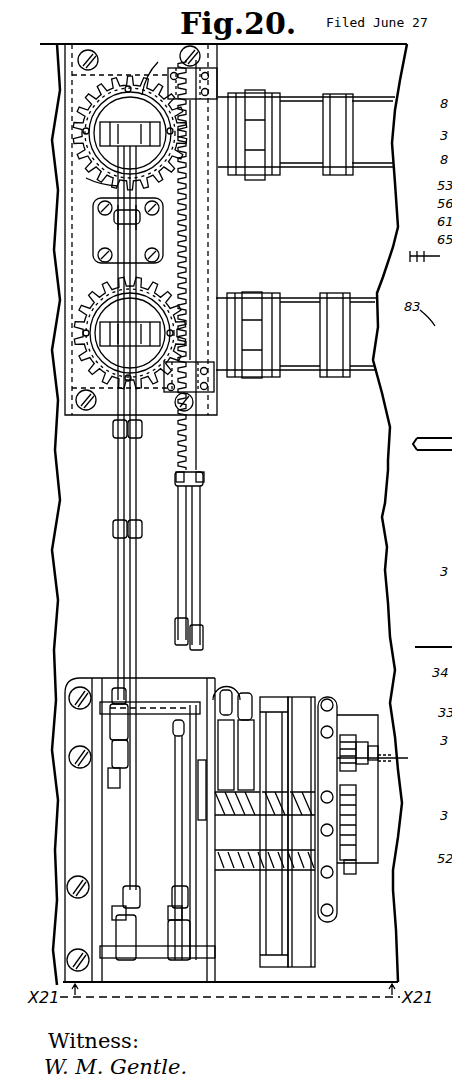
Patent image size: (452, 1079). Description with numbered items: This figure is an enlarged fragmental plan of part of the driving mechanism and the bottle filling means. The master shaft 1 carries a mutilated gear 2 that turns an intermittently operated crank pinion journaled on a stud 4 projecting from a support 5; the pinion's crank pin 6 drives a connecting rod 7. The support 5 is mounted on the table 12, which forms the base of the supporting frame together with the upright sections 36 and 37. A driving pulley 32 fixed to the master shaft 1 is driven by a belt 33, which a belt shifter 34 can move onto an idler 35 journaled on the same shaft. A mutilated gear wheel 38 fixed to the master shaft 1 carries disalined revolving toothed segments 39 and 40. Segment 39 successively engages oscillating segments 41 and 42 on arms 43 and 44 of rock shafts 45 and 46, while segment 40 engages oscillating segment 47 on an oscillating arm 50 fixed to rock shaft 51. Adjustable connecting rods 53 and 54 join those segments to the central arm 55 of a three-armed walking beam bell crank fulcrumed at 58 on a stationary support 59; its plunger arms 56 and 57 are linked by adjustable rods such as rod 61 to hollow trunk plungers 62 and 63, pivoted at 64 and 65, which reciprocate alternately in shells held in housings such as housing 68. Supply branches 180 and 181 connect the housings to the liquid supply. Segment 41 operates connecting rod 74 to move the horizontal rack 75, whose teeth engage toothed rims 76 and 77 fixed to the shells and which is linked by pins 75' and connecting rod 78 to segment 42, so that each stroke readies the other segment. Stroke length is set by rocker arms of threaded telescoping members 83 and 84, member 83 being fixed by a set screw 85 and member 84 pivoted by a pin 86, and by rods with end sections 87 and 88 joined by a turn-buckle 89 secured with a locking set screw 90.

The master shaft 1 is at (358, 832).
The mutilated gear 2 is at (350, 872).
The stud 4 is at (376, 765).
The support 5 is at (330, 697).
The crank pin 6 is at (378, 748).
The connecting rod 7 is at (350, 735).
The table 12 is at (385, 540).
The driving pulley 32 is at (254, 758).
The belt 33 is at (270, 697).
The belt shifter 34 is at (262, 985).
The idler 35 is at (300, 697).
The section 36 is at (220, 680).
The section 37 is at (96, 690).
The mutilated gear wheel 38 is at (202, 875).
The revolving toothed segment 39 is at (245, 890).
The revolving toothed segment 40 is at (180, 770).
The oscillating toothed segment 41 is at (245, 916).
The oscillating toothed segment 42 is at (234, 740).
The arm 43 is at (245, 938).
The arm 44 is at (232, 705).
The rock shaft 45 is at (168, 768).
The rock shaft 46 is at (196, 760).
The oscillating toothed segment 47 is at (188, 770).
The oscillating arm 50 is at (188, 962).
The rock shaft 51 is at (152, 700).
The adjustable connecting rod 53 is at (118, 422).
The adjustable connecting rod 54 is at (142, 458).
The central arm 55 is at (127, 208).
The plunger arm 56 is at (120, 335).
The plunger arm 57 is at (140, 175).
The fulcrum 58 is at (142, 230).
The stationary support 59 is at (170, 267).
The adjustable rod 61 is at (108, 145).
The hollow trunk plunger 62 is at (112, 318).
The hollow trunk plunger 63 is at (153, 71).
The pivot 64 is at (70, 372).
The pivot 65 is at (120, 124).
The housing 68 is at (208, 78).
The connecting rod 74 is at (177, 508).
The horizontal rack 75 is at (214, 261).
The pins 75' is at (208, 478).
The toothed rim 76 is at (100, 345).
The toothed rim 77 is at (408, 255).
The connecting rod 78 is at (203, 508).
The threaded telescoping member 83 is at (128, 718).
The threaded telescoping member 84 is at (124, 912).
The set screw 85 is at (128, 692).
The pin 86 is at (128, 752).
The end section 87 is at (118, 600).
The end section 88 is at (113, 430).
The turn-buckle 89 is at (130, 470).
The locking set screw 90 is at (128, 440).
The supply branch 180 is at (306, 135).
The supply branch 181 is at (296, 335).